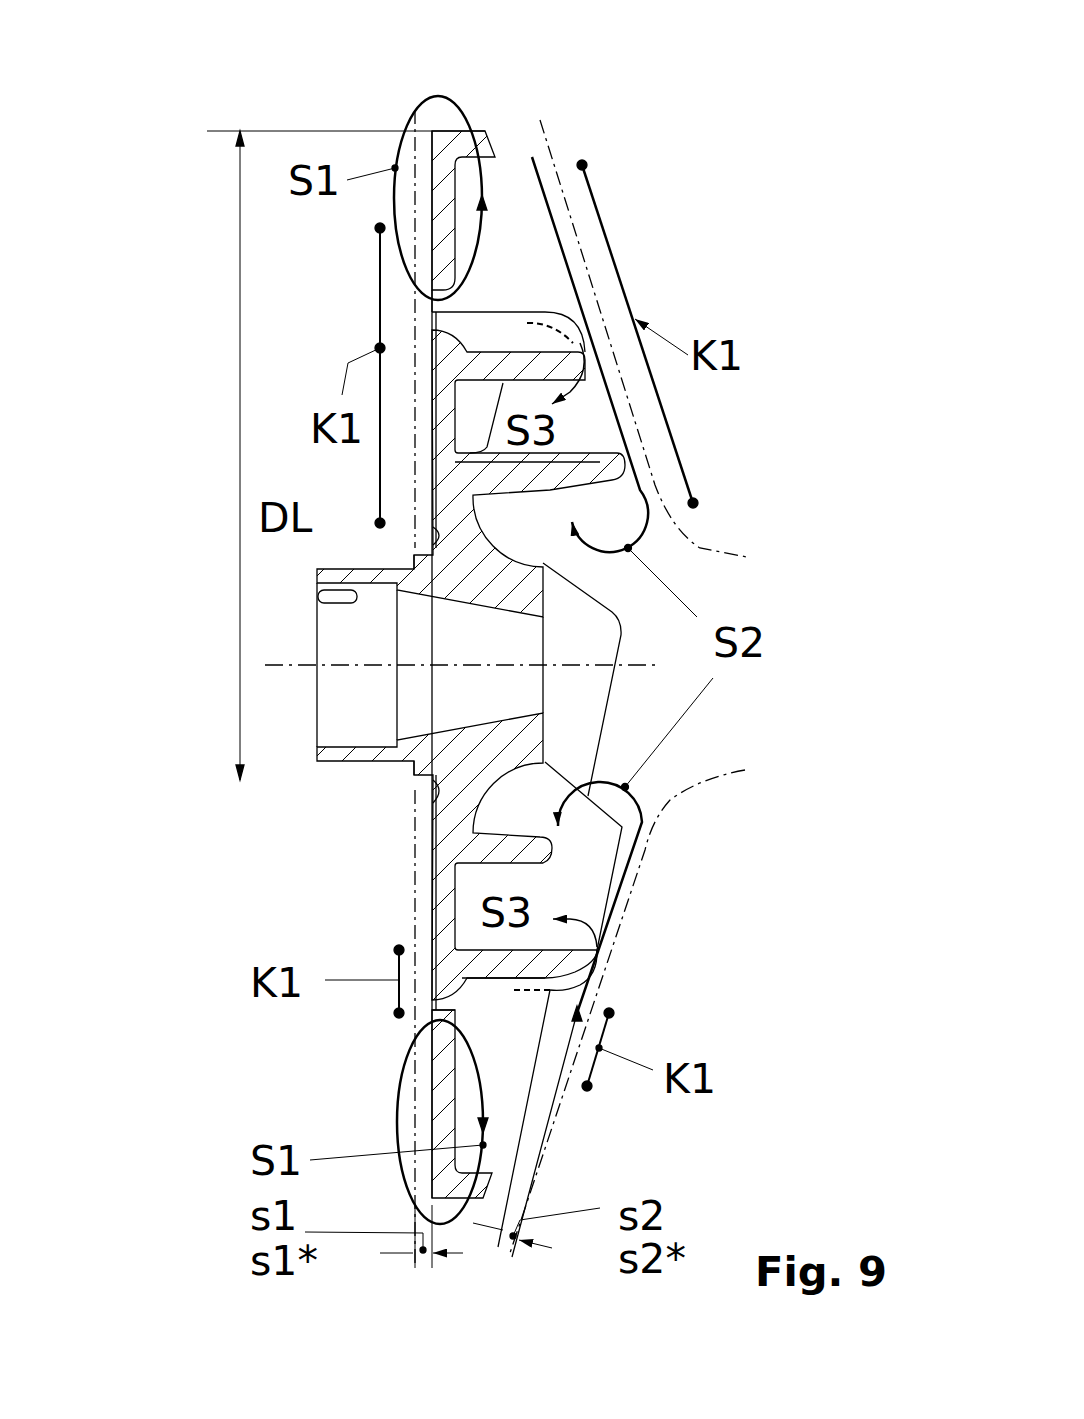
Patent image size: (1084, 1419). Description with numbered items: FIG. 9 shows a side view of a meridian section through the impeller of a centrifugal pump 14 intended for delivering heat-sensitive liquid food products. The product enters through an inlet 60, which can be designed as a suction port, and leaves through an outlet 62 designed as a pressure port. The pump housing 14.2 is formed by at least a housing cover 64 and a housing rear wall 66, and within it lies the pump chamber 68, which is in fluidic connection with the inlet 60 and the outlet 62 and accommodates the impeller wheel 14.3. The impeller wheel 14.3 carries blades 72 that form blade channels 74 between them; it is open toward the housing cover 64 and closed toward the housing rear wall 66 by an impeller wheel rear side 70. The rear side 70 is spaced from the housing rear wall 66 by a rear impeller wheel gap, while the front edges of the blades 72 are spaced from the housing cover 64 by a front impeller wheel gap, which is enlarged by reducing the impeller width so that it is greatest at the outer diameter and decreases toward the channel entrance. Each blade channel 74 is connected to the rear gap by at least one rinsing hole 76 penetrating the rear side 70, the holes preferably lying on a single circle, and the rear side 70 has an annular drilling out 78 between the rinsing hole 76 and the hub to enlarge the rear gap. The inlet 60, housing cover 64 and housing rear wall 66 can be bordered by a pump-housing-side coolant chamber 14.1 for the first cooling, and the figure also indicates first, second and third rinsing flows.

The centrifugal pump 14 is at (613, 113).
The outlet 62 is at (489, 107).
The impeller wheel rear side 70 is at (442, 1097).
The annular drilling out 78 is at (431, 818).
The pump chamber 68 is at (510, 254).
The pump housing 14.2 is at (424, 314).
The inlet 60 is at (742, 689).
The blades 72 is at (535, 962).
The impeller wheel 14.3 is at (624, 978).
The housing cover 64 is at (652, 843).
The pump-housing-side coolant chamber 14.1 is at (589, 721).
The housing rear wall 66 is at (415, 840).
The rinsing hole 76 is at (440, 1010).
The blade channels 74 is at (492, 1051).